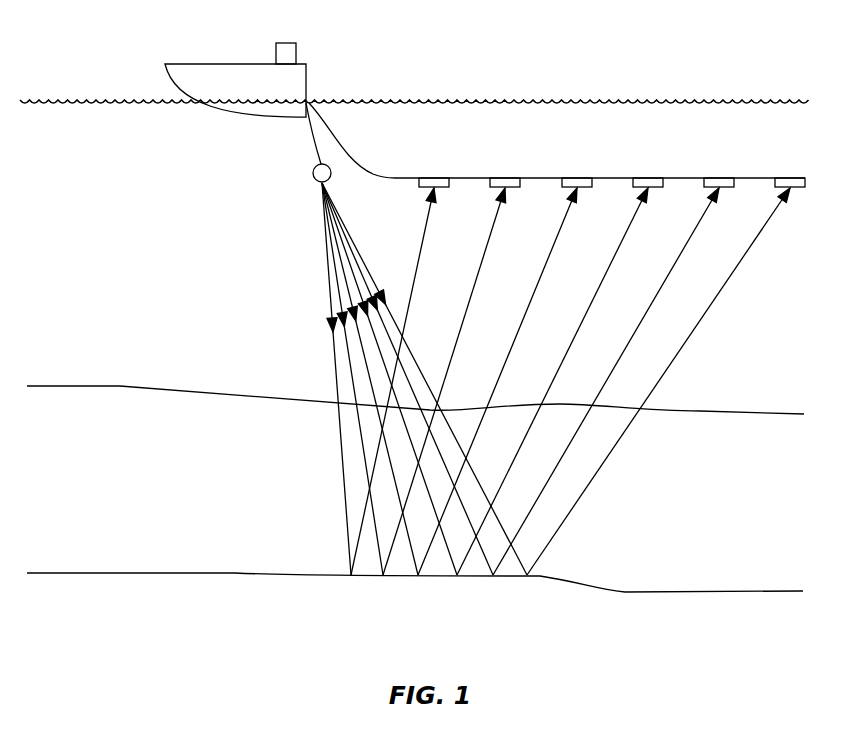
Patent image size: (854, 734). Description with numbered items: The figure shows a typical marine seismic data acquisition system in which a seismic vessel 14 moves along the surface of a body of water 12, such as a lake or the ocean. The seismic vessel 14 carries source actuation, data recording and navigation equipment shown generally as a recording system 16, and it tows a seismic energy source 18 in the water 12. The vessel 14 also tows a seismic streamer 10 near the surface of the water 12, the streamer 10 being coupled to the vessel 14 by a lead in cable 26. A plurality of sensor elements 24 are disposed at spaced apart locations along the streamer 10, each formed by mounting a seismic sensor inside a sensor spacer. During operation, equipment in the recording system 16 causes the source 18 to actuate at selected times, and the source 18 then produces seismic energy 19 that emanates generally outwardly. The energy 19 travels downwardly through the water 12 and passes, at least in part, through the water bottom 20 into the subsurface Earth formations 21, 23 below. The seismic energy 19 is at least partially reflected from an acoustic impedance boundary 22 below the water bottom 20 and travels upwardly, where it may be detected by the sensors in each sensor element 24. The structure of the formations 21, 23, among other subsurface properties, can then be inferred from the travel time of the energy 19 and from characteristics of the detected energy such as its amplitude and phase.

The seismic streamer 10 is at (396, 185).
The body of water 12 is at (414, 167).
The seismic vessel 14 is at (231, 64).
The recording system 16 is at (287, 43).
The seismic energy source 18 is at (313, 171).
The seismic energy 19 is at (324, 270).
The water bottom 20 is at (93, 386).
The subsurface Earth formation 21 is at (157, 466).
The acoustic impedance boundary 22 is at (97, 573).
The subsurface Earth formation 23 is at (157, 618).
The sensor element 24 is at (434, 176).
The lead in cable 26 is at (350, 152).